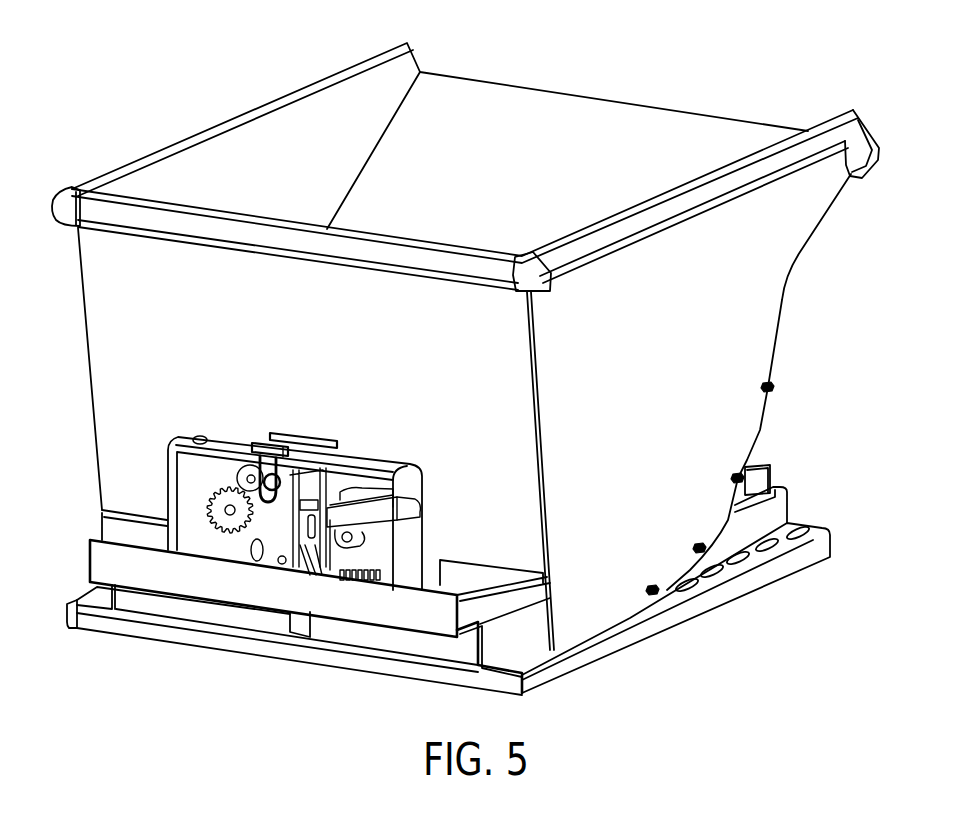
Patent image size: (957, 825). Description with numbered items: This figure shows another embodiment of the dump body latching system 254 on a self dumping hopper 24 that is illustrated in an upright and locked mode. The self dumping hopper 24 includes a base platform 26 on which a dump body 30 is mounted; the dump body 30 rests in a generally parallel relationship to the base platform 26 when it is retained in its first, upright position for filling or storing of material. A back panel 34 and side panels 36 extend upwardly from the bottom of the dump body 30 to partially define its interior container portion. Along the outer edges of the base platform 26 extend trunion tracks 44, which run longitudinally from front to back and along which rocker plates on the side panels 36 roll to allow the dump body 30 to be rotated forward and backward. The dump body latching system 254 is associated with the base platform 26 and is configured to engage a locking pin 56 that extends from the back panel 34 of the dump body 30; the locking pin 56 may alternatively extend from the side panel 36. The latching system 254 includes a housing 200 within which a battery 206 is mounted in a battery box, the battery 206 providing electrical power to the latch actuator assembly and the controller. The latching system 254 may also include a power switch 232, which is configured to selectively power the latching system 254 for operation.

The self dumping hopper 24 is at (662, 72).
The dump body 30 is at (223, 80).
The back panel 34 is at (102, 340).
The side panel 36 is at (772, 277).
The base platform 26 is at (812, 521).
The trunion track 44 is at (793, 565).
The housing 200 is at (178, 448).
The battery 206 is at (410, 512).
The power switch 232 is at (203, 436).
The dump body latching system 254 is at (408, 447).
The locking pin 56 is at (278, 478).